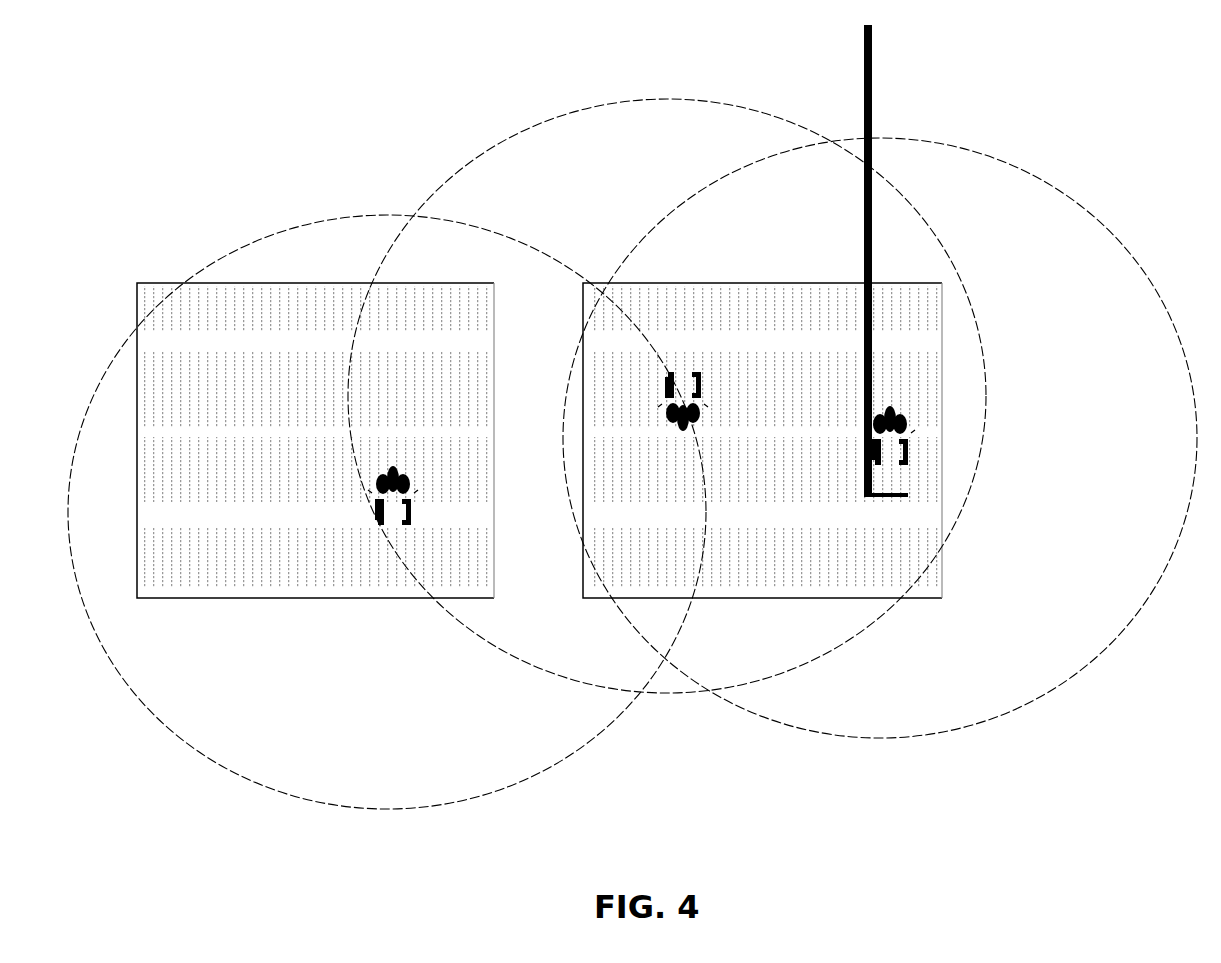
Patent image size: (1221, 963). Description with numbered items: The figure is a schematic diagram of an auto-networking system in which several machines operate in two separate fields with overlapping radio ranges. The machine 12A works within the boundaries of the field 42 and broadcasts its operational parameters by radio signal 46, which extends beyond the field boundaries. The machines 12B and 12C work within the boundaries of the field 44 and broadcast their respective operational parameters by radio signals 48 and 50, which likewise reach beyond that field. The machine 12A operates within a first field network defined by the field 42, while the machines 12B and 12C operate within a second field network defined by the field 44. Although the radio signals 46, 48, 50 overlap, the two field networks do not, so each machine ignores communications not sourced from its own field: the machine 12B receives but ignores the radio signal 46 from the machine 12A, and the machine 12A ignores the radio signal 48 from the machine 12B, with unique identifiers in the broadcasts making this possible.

The field 42 is at (330, 284).
The field 44 is at (732, 279).
The radio signal 46 is at (190, 752).
The radio signal 48 is at (690, 425).
The radio signal 50 is at (995, 720).
The machine 12A is at (396, 524).
The machine 12B is at (682, 426).
The machine 12C is at (890, 468).